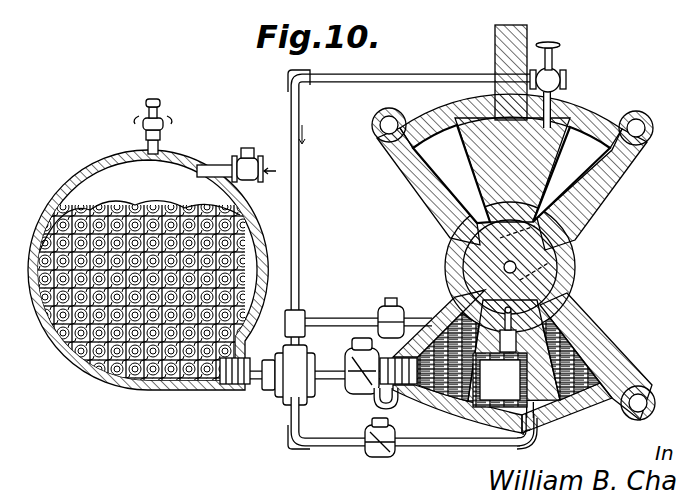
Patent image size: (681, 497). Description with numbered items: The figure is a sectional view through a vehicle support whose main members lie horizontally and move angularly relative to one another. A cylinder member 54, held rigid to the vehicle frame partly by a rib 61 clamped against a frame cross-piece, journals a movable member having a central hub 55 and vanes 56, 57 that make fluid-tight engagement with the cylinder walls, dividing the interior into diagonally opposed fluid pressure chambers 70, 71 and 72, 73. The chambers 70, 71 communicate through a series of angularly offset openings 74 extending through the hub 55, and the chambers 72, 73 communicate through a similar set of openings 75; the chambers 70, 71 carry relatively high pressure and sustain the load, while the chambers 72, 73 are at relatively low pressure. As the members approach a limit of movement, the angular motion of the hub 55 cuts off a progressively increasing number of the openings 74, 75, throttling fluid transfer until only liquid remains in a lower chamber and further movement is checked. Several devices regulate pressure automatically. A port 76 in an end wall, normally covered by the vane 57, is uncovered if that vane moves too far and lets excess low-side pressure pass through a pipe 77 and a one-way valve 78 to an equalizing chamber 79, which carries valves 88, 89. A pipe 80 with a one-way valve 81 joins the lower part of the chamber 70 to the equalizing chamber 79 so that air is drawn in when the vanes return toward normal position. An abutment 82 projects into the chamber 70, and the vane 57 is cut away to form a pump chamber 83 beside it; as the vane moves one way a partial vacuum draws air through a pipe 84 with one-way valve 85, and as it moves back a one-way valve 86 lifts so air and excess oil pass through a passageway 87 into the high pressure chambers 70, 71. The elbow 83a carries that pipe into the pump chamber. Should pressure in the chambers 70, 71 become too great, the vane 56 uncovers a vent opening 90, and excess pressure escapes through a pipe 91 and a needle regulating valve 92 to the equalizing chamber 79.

The equalizing chamber 79 is at (76, 185).
The valve 88 is at (156, 134).
The valve 89 is at (243, 158).
The pipe 91 is at (301, 209).
The rib 61 is at (495, 52).
The needle regulating valve 92 is at (561, 76).
The vent opening 90 is at (554, 97).
The vane 56 is at (582, 128).
The fluid pressure chamber 73 is at (440, 135).
The fluid pressure chamber 71 is at (593, 157).
The central hub 55 is at (546, 229).
The openings 74 is at (535, 238).
The openings 75 is at (548, 260).
The fluid pressure chamber 72 is at (575, 288).
The port 76 is at (563, 312).
The cylinder member 54 is at (597, 347).
The vane 57 is at (562, 396).
The fluid pressure chamber 70 is at (453, 294).
The pipe 77 is at (425, 322).
The passageway 87 is at (496, 318).
The one-way valve 78 is at (380, 312).
The one-way valve 86 is at (500, 380).
The pipe 80 is at (268, 386).
The one-way valve 81 is at (362, 394).
The abutment 82 is at (397, 402).
The pump chamber 83 is at (478, 392).
The elbow 83a is at (540, 432).
The pipe 84 is at (330, 448).
The one-way valve 85 is at (380, 457).